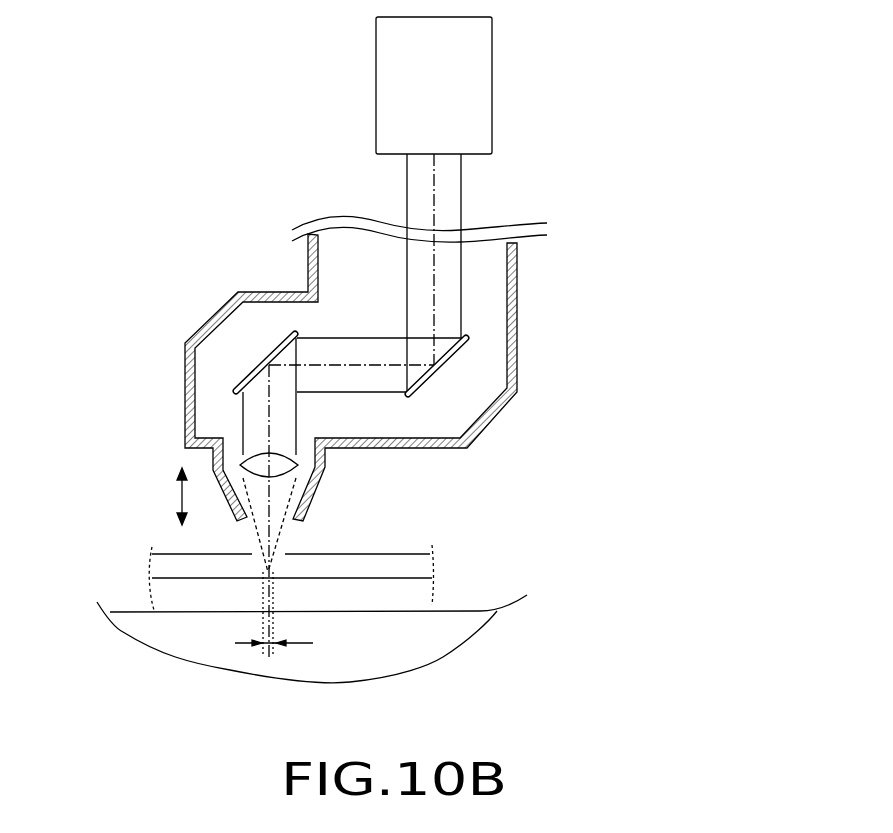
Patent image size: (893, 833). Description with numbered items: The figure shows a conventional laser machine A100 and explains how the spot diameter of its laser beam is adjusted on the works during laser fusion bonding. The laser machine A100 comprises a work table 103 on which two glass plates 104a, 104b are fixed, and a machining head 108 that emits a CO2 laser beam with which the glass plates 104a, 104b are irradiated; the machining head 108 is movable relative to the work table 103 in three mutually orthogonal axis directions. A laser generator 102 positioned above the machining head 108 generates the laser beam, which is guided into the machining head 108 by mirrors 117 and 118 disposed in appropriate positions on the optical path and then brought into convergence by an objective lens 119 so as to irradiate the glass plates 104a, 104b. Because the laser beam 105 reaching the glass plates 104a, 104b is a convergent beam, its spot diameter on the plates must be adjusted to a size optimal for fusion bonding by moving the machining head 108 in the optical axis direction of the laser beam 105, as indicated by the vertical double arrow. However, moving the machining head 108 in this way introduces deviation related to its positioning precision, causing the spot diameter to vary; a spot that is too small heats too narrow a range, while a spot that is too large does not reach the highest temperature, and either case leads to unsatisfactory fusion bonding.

The laser machine A100 is at (163, 192).
The laser generator 102 is at (493, 93).
The machining head 108 is at (185, 390).
The mirror 118 is at (280, 348).
The mirror 117 is at (453, 353).
The objective lens 119 is at (287, 480).
The laser beam 105 is at (283, 538).
The glass plate 104a is at (420, 565).
The glass plate 104b is at (422, 592).
The work table 103 is at (423, 642).